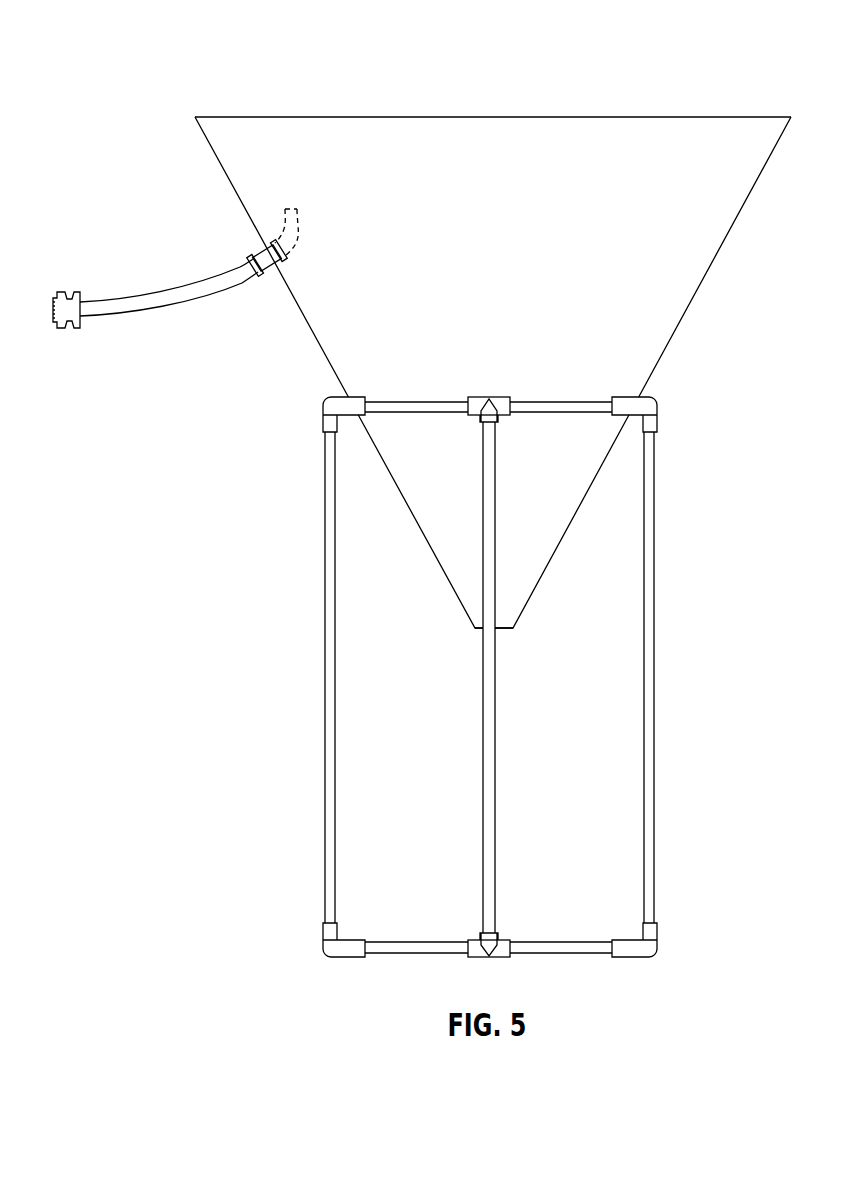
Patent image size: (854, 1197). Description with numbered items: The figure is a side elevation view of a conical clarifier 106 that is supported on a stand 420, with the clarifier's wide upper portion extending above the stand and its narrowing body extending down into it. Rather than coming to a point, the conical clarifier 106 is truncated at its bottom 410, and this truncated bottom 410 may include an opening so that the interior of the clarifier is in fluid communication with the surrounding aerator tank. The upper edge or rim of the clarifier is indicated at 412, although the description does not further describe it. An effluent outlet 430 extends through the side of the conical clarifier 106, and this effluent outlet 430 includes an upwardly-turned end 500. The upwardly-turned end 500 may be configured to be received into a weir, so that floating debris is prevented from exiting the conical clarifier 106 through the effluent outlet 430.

The conical clarifier 106 is at (493, 358).
The upper rim of funnel 412 is at (643, 117).
The truncated bottom 410 is at (475, 628).
The effluent outlet 430 is at (287, 209).
The upwardly-turned end 500 is at (296, 240).
The stand 420 is at (324, 651).